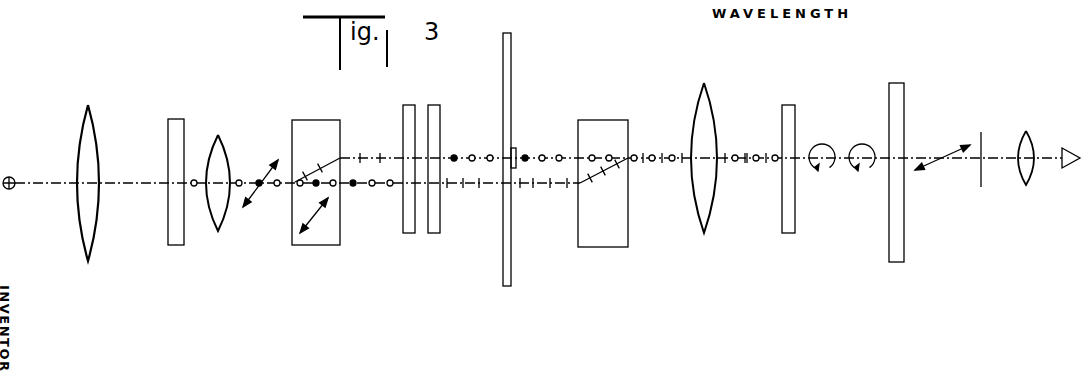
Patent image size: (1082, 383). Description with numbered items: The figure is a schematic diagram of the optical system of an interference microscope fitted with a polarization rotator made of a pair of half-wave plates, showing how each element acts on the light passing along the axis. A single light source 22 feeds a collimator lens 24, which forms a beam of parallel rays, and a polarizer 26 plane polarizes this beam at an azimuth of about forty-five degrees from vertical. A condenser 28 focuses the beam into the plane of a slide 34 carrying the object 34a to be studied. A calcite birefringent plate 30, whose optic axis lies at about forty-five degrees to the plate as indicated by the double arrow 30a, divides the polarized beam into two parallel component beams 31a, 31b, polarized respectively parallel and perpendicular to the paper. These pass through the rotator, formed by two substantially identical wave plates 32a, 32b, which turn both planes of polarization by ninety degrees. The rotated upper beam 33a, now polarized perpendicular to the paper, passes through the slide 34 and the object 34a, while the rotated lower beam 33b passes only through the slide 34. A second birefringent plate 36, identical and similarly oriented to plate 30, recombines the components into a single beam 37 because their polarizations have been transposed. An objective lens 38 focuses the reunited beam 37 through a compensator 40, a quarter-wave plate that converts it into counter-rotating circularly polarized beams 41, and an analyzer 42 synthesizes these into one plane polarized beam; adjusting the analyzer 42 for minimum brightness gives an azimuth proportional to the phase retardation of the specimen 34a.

The light source 22 is at (13, 178).
The collimator lens 24 is at (80, 222).
The polarizer 26 is at (168, 216).
The condenser 28 is at (222, 150).
The birefringent plate 30 is at (306, 120).
The double arrow 30a is at (320, 236).
The upper component beam 31a is at (364, 154).
The lower component beam 31b is at (376, 186).
The first half-wave plate 32a is at (407, 236).
The second half-wave plate 32b is at (433, 236).
The rotated upper beam 33a is at (463, 155).
The rotated lower beam 33b is at (474, 186).
The slide 34 is at (503, 258).
The object 34a is at (520, 148).
The second birefringent plate 36 is at (598, 247).
The recombined beam 37 is at (666, 165).
The objective lens 38 is at (714, 205).
The compensator 40 is at (787, 234).
The circularly polarized beams 41 is at (840, 170).
The analyzer 42 is at (900, 265).